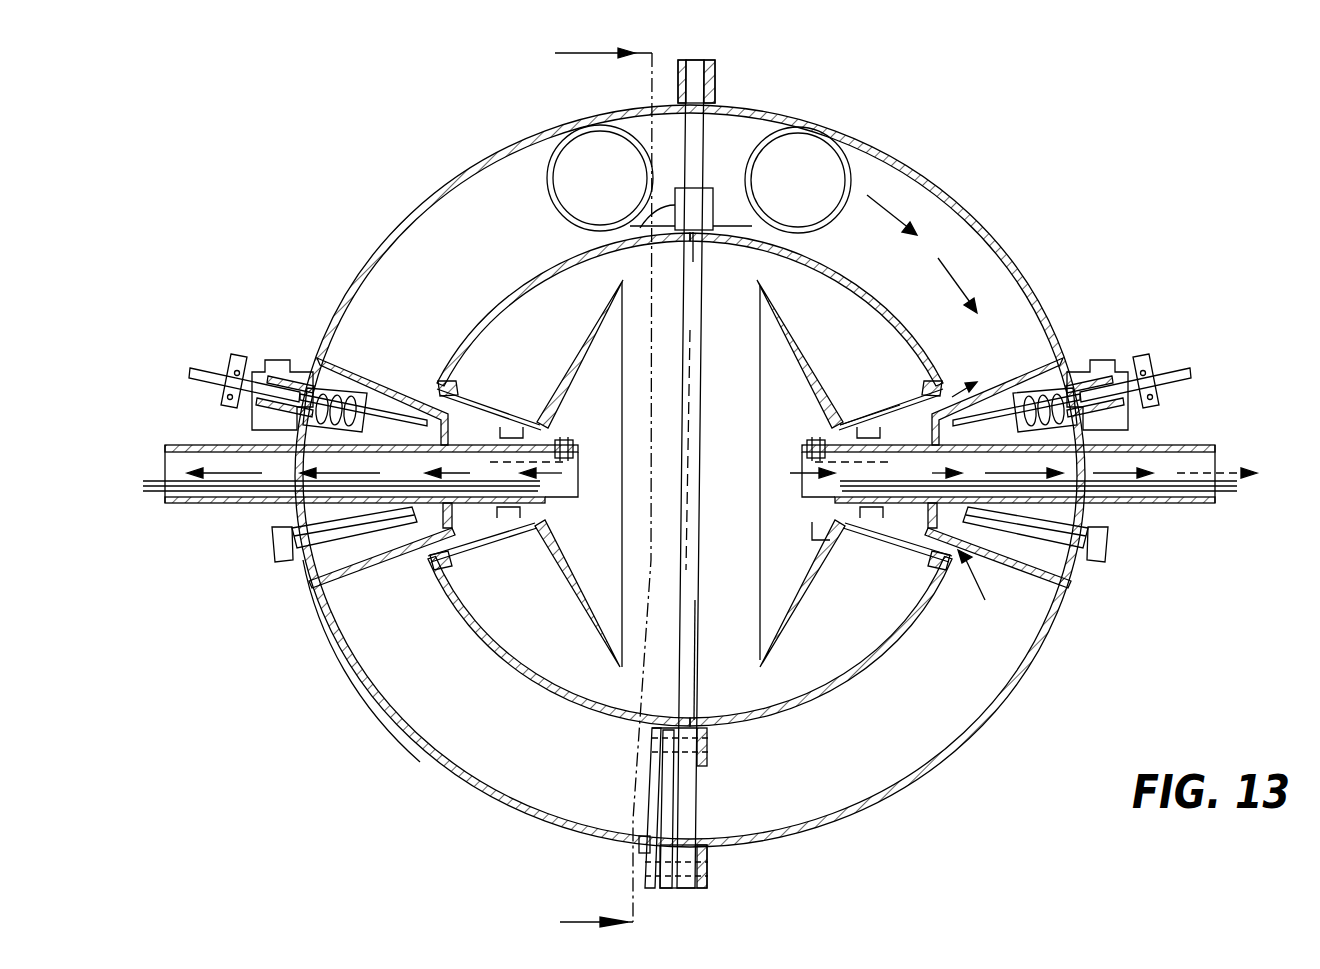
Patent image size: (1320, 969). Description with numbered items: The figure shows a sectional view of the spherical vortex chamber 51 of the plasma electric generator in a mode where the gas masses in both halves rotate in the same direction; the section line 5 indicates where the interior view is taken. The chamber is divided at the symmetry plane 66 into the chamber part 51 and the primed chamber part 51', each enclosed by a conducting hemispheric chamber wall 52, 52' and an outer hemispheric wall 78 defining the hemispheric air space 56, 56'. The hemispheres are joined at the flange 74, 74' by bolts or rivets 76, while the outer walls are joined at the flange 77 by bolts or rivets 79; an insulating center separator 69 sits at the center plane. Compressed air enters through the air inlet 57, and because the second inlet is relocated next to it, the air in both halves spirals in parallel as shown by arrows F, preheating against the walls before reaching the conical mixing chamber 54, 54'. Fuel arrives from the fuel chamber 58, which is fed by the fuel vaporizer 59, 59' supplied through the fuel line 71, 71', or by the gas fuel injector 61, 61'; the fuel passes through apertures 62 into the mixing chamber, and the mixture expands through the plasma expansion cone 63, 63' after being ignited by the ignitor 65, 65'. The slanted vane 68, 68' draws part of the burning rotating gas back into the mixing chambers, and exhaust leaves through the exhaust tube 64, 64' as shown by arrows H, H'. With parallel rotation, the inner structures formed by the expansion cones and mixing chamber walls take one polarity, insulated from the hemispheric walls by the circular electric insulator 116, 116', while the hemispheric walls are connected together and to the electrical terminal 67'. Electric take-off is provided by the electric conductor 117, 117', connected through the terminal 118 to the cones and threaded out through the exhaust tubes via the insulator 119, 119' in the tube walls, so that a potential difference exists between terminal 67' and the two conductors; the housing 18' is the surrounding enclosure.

The section line 5— 5 is at (578, 493).
The housing 18' is at (351, 661).
The spherical vortex chamber 51 is at (745, 266).
The chamber part 51' is at (523, 323).
The hemispheric chamber wall 52 is at (821, 479).
The hemispheric chamber wall 52' is at (559, 486).
The conical mixing chamber 54 is at (891, 396).
The conical mixing chamber 54' is at (489, 402).
The hemispheric air space 56 is at (910, 703).
The hemispheric air space 56' is at (440, 688).
The air inlet 57 is at (840, 158).
The fuel chamber 58 is at (1000, 435).
The fuel vaporizer 59 is at (1086, 365).
The fuel vaporizer 59' is at (334, 372).
The gas fuel injector 61 is at (1021, 553).
The gas fuel injector 61' is at (347, 556).
The apertures 62 is at (882, 542).
The plasma expansion cone 63 is at (800, 354).
The plasma expansion cone 63' is at (580, 354).
The exhaust tube 64 is at (1019, 499).
The exhaust tube 64' is at (360, 499).
The ignitor 65 is at (796, 429).
The ignitor 65' is at (581, 429).
The symmetry plane 66 is at (690, 447).
The electrical terminal 67' is at (608, 810).
The slanted vane 68 is at (864, 394).
The slanted vane 68' is at (524, 593).
The center separator 69 is at (696, 668).
The fuel line 71 is at (965, 329).
The fuel line 71' is at (281, 397).
The flange 74 is at (707, 808).
The flange 74' is at (677, 232).
The bolts or rivets 76 is at (708, 742).
The flange 77 is at (703, 886).
The hemispheric outer wall 78 is at (1036, 657).
The bolts or rivets 79 is at (703, 868).
The circular electric insulator 116 is at (907, 462).
The circular electric insulator 116' is at (485, 483).
The electric conductor 117 is at (1025, 527).
The electric conductor 117' is at (355, 527).
The terminal 118 is at (815, 533).
The insulator 119 is at (796, 478).
The insulator 119' is at (556, 477).
The arrows F is at (895, 212).
The arrow H is at (1023, 446).
The arrow H' is at (374, 446).